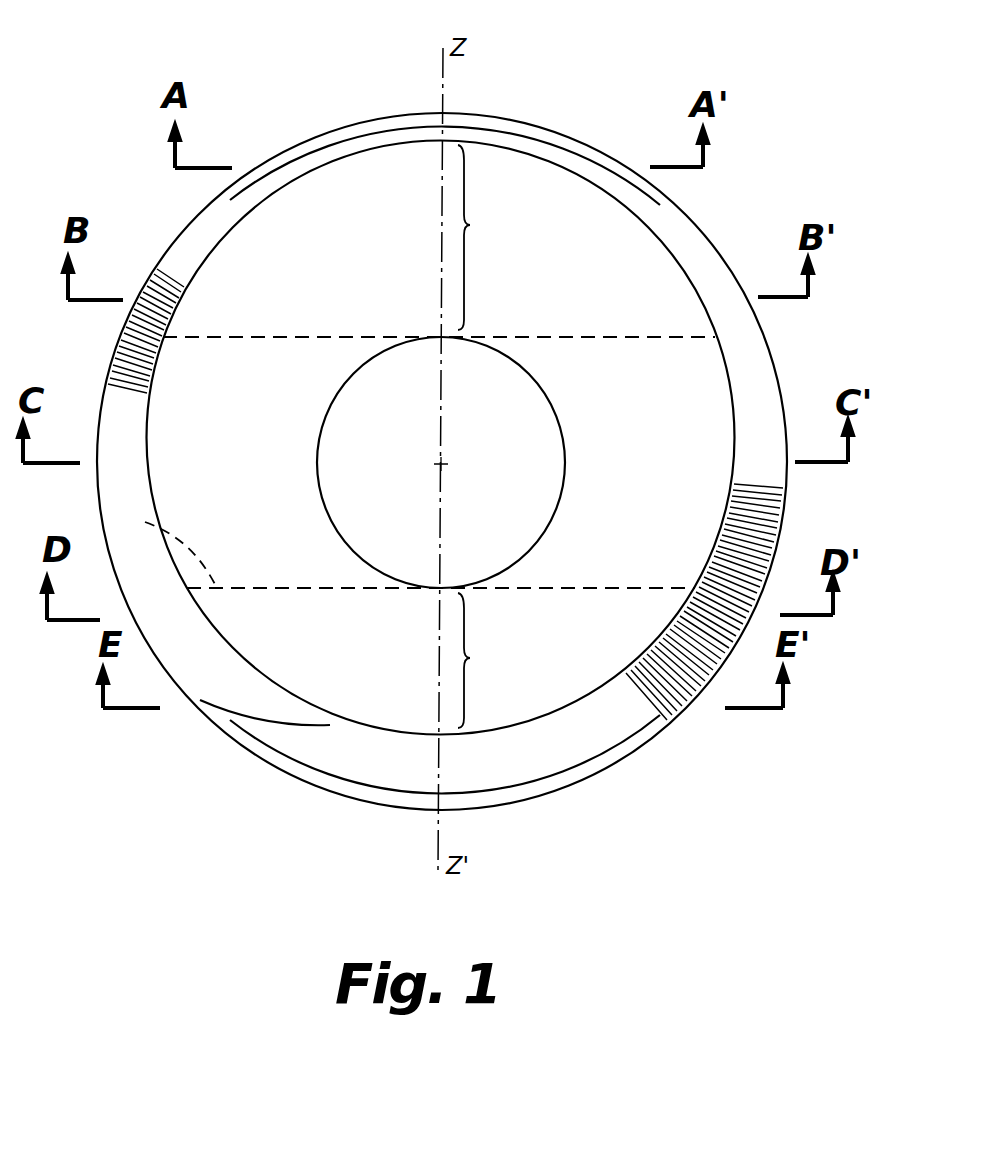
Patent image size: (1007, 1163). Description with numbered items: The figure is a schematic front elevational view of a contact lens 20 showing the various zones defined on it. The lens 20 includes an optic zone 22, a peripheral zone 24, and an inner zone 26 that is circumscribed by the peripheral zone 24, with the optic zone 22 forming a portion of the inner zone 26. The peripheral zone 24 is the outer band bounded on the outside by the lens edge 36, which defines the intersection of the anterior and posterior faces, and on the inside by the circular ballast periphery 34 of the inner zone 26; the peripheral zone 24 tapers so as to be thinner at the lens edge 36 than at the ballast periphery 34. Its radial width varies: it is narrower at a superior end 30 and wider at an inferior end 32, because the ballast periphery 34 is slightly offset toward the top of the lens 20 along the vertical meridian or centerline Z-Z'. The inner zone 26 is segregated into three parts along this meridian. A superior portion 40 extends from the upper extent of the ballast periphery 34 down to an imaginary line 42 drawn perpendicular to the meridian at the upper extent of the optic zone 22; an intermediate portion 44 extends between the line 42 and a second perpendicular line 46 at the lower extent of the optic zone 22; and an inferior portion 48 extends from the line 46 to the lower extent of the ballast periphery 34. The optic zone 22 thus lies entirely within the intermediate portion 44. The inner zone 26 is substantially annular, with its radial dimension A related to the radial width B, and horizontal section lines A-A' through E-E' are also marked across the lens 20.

The lens 20 is at (442, 405).
The optic zone 22 is at (375, 398).
The peripheral zone 24 is at (282, 742).
The inner zone 26 is at (550, 675).
The superior end 30 is at (422, 125).
The inferior end 32 is at (413, 777).
The ballast periphery 34 is at (683, 263).
The lens edge 36 is at (607, 153).
The superior portion 40 is at (385, 282).
The imaginary line 42 is at (225, 337).
The intermediate portion 44 is at (212, 452).
The second perpendicular line 46 is at (145, 522).
The inferior portion 48 is at (372, 684).